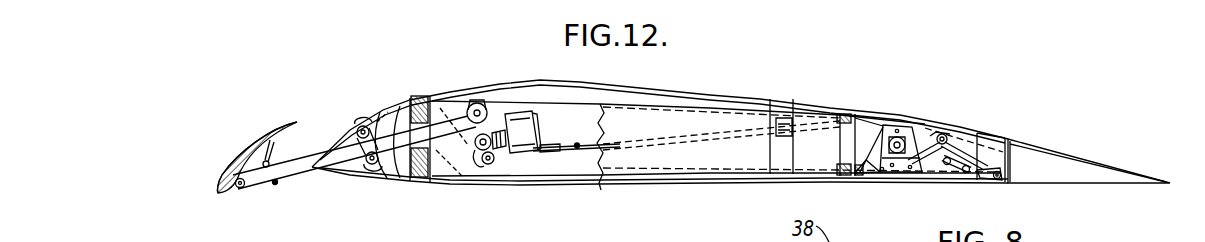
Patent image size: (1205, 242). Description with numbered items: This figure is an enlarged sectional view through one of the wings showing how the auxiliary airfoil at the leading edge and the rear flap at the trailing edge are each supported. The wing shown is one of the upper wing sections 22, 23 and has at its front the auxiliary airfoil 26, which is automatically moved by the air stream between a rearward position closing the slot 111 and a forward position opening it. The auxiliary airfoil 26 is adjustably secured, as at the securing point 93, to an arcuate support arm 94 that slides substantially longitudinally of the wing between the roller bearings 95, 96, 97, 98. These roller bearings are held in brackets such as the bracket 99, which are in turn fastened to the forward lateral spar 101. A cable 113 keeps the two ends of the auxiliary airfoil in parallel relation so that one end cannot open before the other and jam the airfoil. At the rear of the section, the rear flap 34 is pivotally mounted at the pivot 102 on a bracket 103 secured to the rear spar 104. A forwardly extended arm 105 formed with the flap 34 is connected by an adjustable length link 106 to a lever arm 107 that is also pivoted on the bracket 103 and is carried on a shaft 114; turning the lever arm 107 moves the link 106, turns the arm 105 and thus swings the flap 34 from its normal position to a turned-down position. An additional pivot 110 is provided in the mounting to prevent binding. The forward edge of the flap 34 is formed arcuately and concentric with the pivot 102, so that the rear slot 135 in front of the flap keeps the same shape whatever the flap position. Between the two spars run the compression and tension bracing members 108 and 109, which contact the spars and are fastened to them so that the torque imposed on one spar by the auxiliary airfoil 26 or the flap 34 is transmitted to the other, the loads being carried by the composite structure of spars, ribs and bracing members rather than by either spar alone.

The wing section 22 is at (242, 188).
The wing section 23 is at (765, 98).
The auxiliary airfoil 26 is at (241, 152).
The rear flap 34 is at (1083, 158).
The adjustable securing point 93 is at (267, 158).
The arcuate support arm 94 is at (298, 172).
The roller bearing 95 is at (372, 166).
The roller bearing 96 is at (362, 126).
The roller bearing 97 is at (482, 150).
The roller bearing 98 is at (478, 105).
The bracket 99 is at (392, 122).
The forward lateral spar 101 is at (420, 98).
The pivot 102 is at (1003, 182).
The bracket 103 is at (918, 135).
The rear spar 104 is at (845, 112).
The forwardly extended arm 105 is at (996, 150).
The adjustable length link 106 is at (948, 140).
The lever arm 107 is at (897, 170).
The bracing member 108 is at (702, 107).
The bracing member 109 is at (686, 181).
The pivot 110 is at (960, 178).
The slot 111 is at (312, 126).
The cable 113 is at (597, 155).
The shaft 114 is at (896, 139).
The slot 135 is at (987, 142).